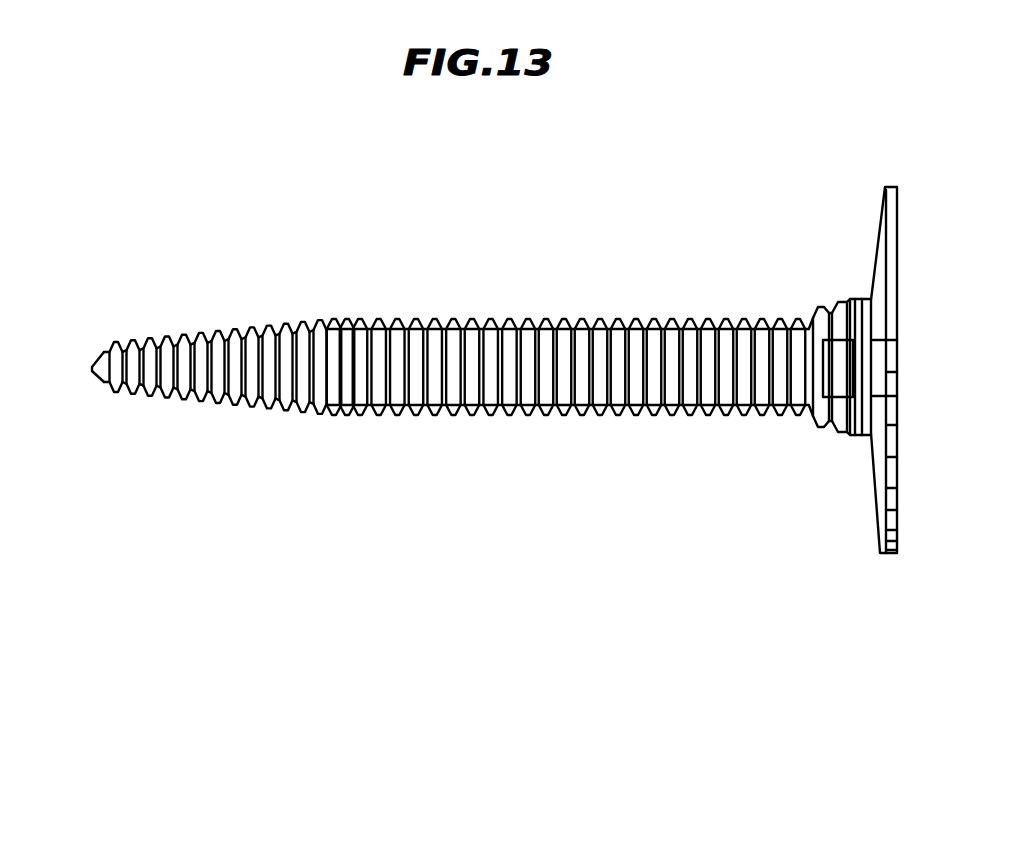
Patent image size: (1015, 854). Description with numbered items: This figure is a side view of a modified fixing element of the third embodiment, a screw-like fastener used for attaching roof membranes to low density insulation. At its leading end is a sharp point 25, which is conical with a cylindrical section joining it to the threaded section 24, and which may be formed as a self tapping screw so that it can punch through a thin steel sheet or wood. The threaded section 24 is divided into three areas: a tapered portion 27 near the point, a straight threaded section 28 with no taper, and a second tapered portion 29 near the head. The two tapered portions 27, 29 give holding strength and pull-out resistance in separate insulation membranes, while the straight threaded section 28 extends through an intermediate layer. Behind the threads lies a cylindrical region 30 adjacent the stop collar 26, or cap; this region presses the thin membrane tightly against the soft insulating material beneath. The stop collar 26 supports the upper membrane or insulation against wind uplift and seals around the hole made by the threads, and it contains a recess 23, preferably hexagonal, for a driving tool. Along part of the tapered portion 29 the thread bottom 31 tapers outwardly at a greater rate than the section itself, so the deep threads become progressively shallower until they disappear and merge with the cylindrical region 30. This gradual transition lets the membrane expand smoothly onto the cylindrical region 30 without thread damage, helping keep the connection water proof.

The recess 23 is at (897, 385).
The threaded section 24 is at (90, 162).
The sharp point 25 is at (93, 370).
The stop collar 26 is at (893, 505).
The tapered portion 27 is at (332, 294).
The straight threaded section 28 is at (337, 294).
The tapered portion 29 is at (867, 294).
The cylindrical region 30 is at (866, 434).
The thread bottom 31 is at (842, 429).